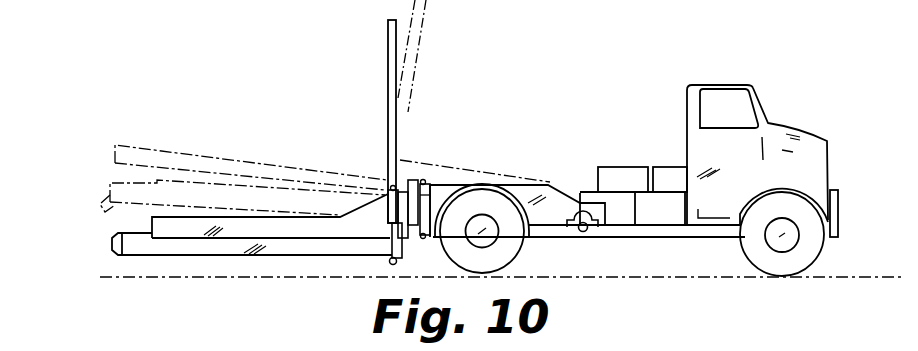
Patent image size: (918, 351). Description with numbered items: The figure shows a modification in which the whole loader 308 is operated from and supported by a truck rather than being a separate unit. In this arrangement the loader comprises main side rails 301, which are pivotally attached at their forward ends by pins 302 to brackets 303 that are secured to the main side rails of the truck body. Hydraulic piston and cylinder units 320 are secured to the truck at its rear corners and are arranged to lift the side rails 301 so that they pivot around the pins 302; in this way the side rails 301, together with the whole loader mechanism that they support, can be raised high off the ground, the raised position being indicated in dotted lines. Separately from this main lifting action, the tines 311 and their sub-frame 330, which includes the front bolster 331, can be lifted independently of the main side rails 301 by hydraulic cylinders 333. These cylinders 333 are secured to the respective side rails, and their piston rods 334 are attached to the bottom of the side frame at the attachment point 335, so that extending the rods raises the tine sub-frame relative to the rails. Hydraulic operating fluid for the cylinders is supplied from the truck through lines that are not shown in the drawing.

The main side rails 301 is at (313, 220).
The pins 302 is at (583, 232).
The brackets 303 is at (578, 213).
The loader 308 is at (322, 150).
The tines 311 is at (110, 236).
The hydraulic piston and cylinder units 320 is at (432, 207).
The sub-frame 330 is at (402, 252).
The front bolster 331 is at (390, 113).
The hydraulic cylinders 333 is at (390, 212).
The piston rods 334 is at (392, 243).
The attachment point at bottom of side frame 335 is at (390, 265).